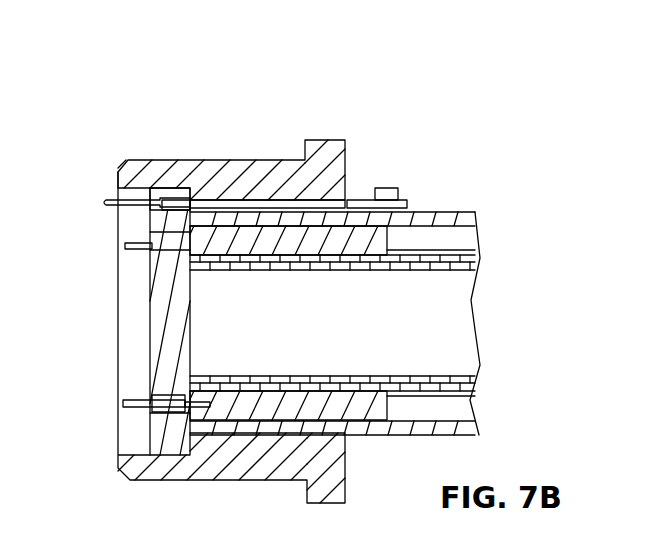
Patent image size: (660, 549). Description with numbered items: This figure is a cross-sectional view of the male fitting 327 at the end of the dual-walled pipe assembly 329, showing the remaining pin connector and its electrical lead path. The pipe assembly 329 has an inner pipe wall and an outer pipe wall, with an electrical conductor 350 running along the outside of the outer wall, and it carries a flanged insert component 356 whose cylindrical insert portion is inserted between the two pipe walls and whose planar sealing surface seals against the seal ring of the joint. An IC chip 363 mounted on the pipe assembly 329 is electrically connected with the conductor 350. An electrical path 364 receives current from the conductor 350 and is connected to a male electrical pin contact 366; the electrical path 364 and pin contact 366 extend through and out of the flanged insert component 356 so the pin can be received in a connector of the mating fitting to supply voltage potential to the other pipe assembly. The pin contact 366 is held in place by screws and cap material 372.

The male fitting 327 is at (278, 160).
The pipe assembly 329 is at (470, 199).
The electrical conductor 350 is at (428, 212).
The flanged insert component 356 is at (362, 240).
The IC chip 363 is at (390, 188).
The electrical path 364 is at (244, 205).
The male electrical pin contact 366 is at (133, 200).
The screws and cap material 372 is at (167, 242).